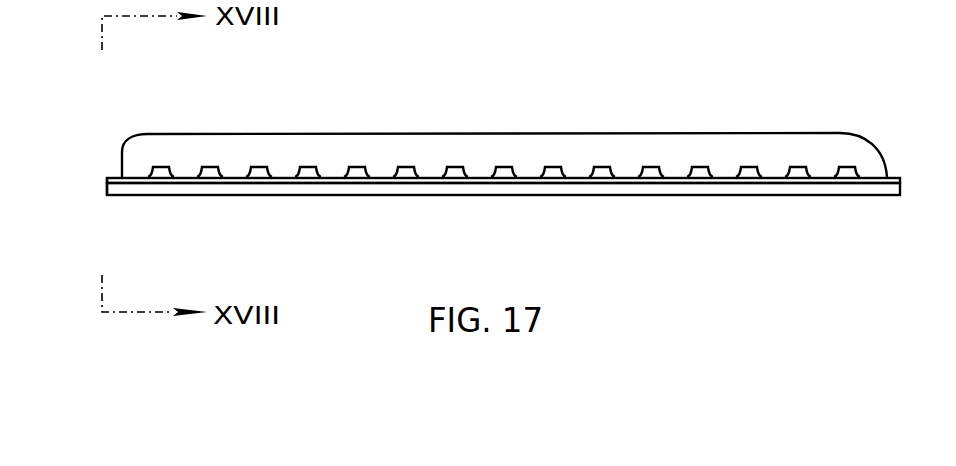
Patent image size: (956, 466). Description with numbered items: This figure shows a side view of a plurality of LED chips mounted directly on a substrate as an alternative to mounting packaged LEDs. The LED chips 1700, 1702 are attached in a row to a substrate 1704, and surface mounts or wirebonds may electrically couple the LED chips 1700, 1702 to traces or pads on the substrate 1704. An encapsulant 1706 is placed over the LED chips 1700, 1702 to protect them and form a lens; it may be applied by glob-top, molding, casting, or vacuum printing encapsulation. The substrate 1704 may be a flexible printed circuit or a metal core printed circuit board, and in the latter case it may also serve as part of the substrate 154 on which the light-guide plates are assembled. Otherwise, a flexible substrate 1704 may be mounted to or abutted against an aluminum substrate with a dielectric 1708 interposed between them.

The LED chip 1700 is at (160, 167).
The LED chip 1702 is at (208, 167).
The substrate 1704 is at (108, 178).
The encapsulant 1706 is at (395, 132).
The dielectric 1708 is at (107, 179).
The substrate 154 is at (595, 195).